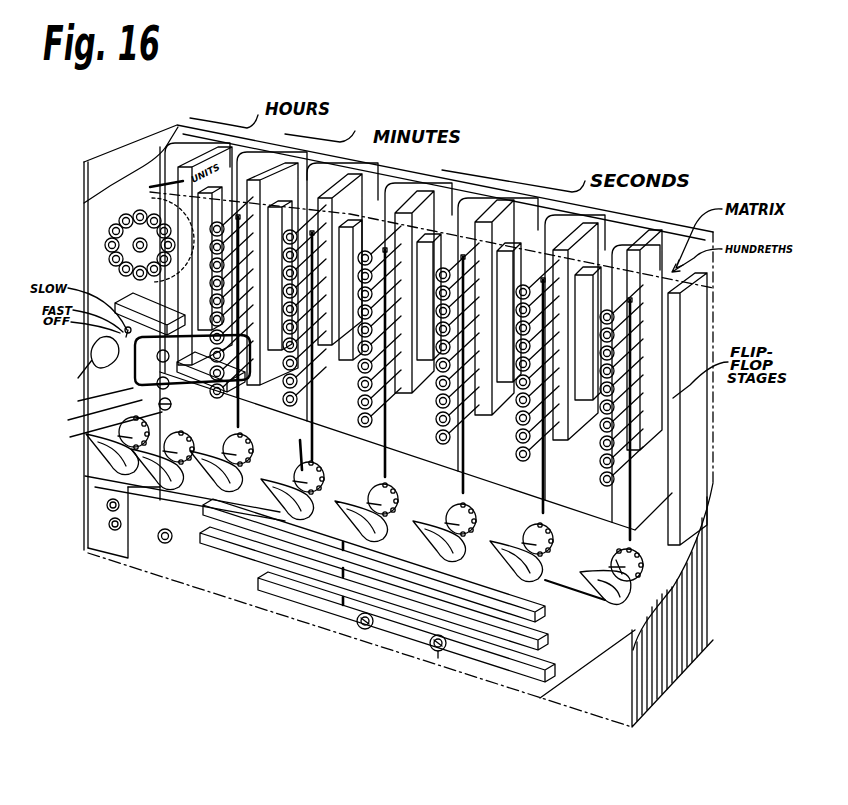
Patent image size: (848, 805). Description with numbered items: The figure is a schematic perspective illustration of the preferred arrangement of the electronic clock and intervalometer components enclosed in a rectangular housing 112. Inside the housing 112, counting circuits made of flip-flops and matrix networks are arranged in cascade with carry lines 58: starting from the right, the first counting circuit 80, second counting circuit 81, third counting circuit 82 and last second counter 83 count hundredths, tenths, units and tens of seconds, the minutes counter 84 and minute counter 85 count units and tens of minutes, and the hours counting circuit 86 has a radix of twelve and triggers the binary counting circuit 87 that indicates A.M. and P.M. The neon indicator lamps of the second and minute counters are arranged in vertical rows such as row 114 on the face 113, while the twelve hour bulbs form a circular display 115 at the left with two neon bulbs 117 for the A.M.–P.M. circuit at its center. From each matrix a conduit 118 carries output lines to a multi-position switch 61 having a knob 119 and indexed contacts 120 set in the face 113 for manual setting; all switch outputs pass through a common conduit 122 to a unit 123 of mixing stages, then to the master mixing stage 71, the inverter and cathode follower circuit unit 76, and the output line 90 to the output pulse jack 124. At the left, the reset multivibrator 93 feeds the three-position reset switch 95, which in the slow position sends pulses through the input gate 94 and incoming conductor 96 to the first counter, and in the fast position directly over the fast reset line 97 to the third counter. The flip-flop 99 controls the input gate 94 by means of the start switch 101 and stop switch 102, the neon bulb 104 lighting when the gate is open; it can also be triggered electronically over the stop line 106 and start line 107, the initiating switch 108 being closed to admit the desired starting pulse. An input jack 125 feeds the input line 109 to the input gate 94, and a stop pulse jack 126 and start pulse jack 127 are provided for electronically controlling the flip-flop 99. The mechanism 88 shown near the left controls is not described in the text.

The carry lines 58 is at (545, 215).
The multi-position switch 61 is at (650, 552).
The master mixing stage 71 is at (540, 640).
The inverter and cathode follower circuit unit 76 is at (415, 640).
The first counting circuit 80 is at (692, 302).
The second counting circuit 81 is at (640, 262).
The third counting circuit 82 is at (551, 250).
The last second counter 83 is at (470, 232).
The minutes counter 84 is at (392, 208).
The minute counter 85 is at (332, 185).
The hours counting circuit 86 is at (240, 178).
The binary counting circuit 87 is at (133, 297).
The cam mechanism 88 is at (200, 427).
The output line 90 is at (450, 640).
The reset multivibrator 93 is at (93, 399).
The input gate 94 is at (303, 418).
The reset switch 95 is at (100, 338).
The incoming conductor 96 is at (492, 483).
The fast reset line 97 is at (332, 390).
The flip-flop 99 is at (211, 372).
The start switch 101 is at (173, 403).
The stop switch 102 is at (99, 429).
The neon bulb 104 is at (91, 415).
The stop line 106 is at (160, 510).
The start line 107 is at (127, 484).
The initiating switch 108 is at (107, 507).
The input line 109 is at (257, 577).
The housing 112 is at (658, 673).
The face 113 is at (362, 469).
The row 114 is at (604, 498).
The circular display 115 is at (90, 250).
The neon bulbs 117 is at (155, 187).
The conduit 118 is at (240, 407).
The knob 119 is at (580, 584).
The indexed contacts 120 is at (610, 560).
The common conduit 122 is at (597, 622).
The unit 123 is at (540, 614).
The output pulse jack 124 is at (438, 653).
The input jack 125 is at (362, 630).
The stop pulse jack 126 is at (166, 546).
The start pulse jack 127 is at (113, 533).